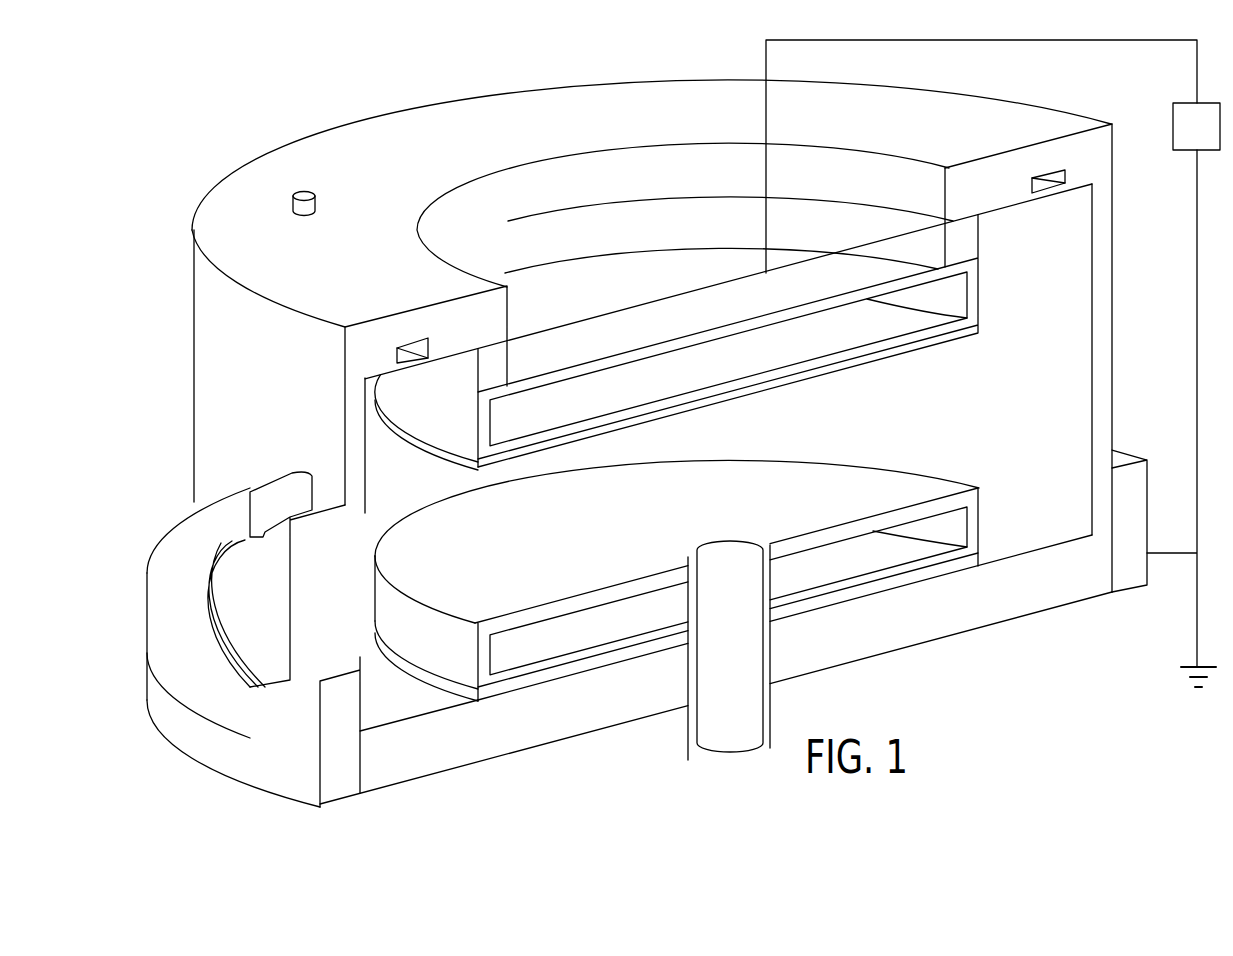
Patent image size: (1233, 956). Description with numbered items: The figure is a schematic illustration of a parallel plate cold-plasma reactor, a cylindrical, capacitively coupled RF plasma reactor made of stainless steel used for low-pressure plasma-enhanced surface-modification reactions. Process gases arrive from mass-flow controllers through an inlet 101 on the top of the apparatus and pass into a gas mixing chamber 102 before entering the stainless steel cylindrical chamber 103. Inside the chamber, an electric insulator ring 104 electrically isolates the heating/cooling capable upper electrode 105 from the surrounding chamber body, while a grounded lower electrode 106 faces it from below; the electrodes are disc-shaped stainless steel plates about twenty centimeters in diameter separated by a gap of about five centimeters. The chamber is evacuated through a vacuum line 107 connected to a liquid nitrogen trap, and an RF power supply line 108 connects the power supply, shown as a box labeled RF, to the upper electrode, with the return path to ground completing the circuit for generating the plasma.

The inlet for the gases coming from mass-flow controllers 101 is at (280, 200).
The gas mixing chamber 102 is at (438, 337).
The stainless steel cylindrical chamber 103 is at (230, 403).
The electric insulator ring 104 is at (966, 232).
The heating/cooling capable upper electrode 105 is at (954, 292).
The grounded lower electrode 106 is at (609, 624).
The vacuum line connected to a liquid nitrogen trap 107 is at (728, 692).
The RF power line 108 is at (1050, 41).